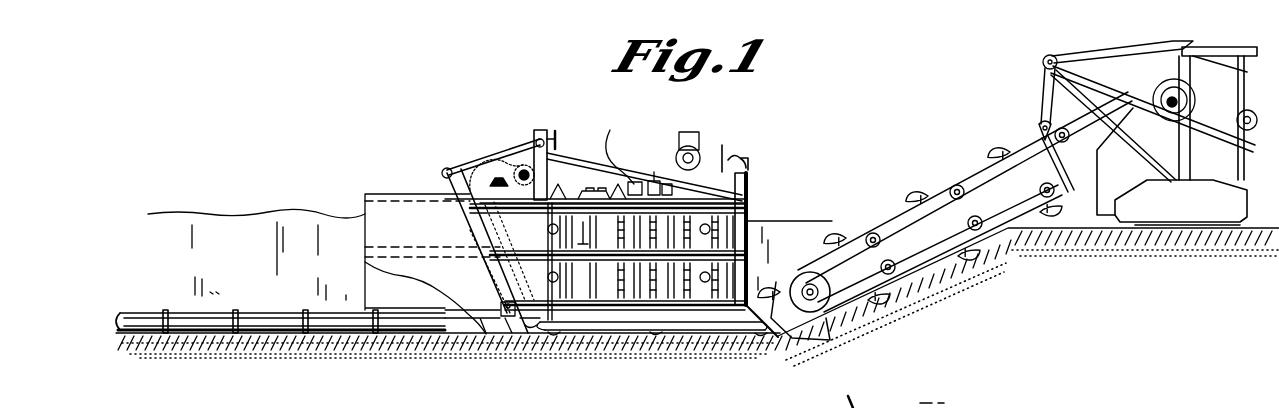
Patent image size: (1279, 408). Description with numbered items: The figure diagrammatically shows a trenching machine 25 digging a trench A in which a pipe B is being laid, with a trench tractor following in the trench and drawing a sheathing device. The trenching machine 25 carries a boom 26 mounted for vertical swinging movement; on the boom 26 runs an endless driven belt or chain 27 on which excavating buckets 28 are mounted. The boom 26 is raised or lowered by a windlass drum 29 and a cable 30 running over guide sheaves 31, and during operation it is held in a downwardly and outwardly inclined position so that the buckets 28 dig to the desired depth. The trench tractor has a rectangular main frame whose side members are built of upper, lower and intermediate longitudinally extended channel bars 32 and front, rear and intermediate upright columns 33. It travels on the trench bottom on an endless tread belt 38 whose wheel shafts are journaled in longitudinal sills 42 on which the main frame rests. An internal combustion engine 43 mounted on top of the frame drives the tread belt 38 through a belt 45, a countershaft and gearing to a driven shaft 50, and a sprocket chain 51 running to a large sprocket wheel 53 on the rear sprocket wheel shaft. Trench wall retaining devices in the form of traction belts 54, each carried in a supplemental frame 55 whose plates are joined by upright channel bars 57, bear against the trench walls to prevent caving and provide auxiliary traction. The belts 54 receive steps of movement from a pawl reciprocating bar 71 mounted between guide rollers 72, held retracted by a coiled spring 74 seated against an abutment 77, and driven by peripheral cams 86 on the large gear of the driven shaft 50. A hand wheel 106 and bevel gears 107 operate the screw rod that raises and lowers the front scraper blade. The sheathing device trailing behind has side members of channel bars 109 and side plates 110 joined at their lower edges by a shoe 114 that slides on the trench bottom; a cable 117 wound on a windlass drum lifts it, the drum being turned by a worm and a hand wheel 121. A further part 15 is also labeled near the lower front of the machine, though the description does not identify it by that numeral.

The trench A is at (283, 242).
The pipe B is at (254, 326).
The pin connection 15 is at (500, 343).
The trenching machine 25 is at (1177, 136).
The boom 26 is at (951, 216).
The endless driven belt or chain 27 is at (963, 175).
The excavating buckets 28 is at (847, 225).
The windlass drum 29 is at (1242, 104).
The cable 30 is at (1043, 62).
The guide sheaves 31 is at (1038, 127).
The longitudinally extended channel bars 32 is at (607, 256).
The upright channel bars or columns 33 is at (548, 161).
The endless tread belt 38 is at (675, 337).
The sills 42 is at (612, 328).
The internal combustion engine 43 is at (694, 150).
The belt 45 is at (653, 152).
The driven shaft 50 is at (508, 196).
The sprocket chain 51 is at (510, 233).
The sprocket wheel 53 is at (582, 253).
The traction belts 54 is at (667, 257).
The supplemental frame 55 is at (603, 265).
The upright channel bars 57 is at (548, 279).
The pawl reciprocating bar 71 is at (652, 183).
The guide rollers 72 is at (615, 148).
The coiled spring 74 is at (646, 187).
The abutment 77 is at (663, 188).
The peripheral cams 86 is at (500, 157).
The hand wheel 106 is at (833, 407).
The intermeshing bevel gears 107 is at (880, 407).
The longitudinally extended channel bars 109 is at (409, 306).
The side plate 110 is at (432, 252).
The shoe 114 is at (468, 342).
The cable 117 is at (507, 147).
The hand wheel 121 is at (548, 143).